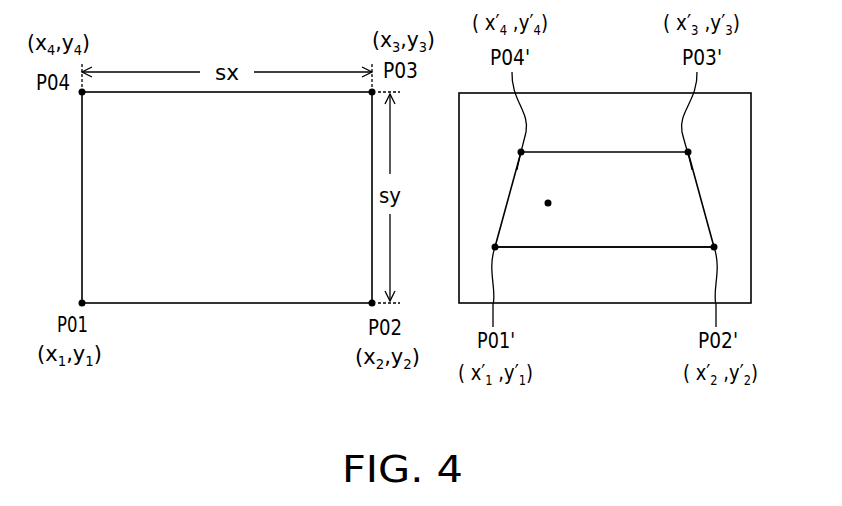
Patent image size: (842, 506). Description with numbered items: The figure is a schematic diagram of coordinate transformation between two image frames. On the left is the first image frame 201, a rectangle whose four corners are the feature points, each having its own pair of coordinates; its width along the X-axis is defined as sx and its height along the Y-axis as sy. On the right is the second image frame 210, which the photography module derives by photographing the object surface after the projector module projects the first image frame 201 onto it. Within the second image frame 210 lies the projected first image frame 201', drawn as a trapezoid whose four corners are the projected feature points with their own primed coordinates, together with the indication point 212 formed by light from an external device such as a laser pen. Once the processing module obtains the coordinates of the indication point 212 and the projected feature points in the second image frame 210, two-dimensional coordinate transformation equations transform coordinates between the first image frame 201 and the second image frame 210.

The first image frame 201 is at (227, 232).
The projected first image frame 201' is at (648, 200).
The second image frame 210 is at (608, 247).
The indication point 212 is at (548, 203).